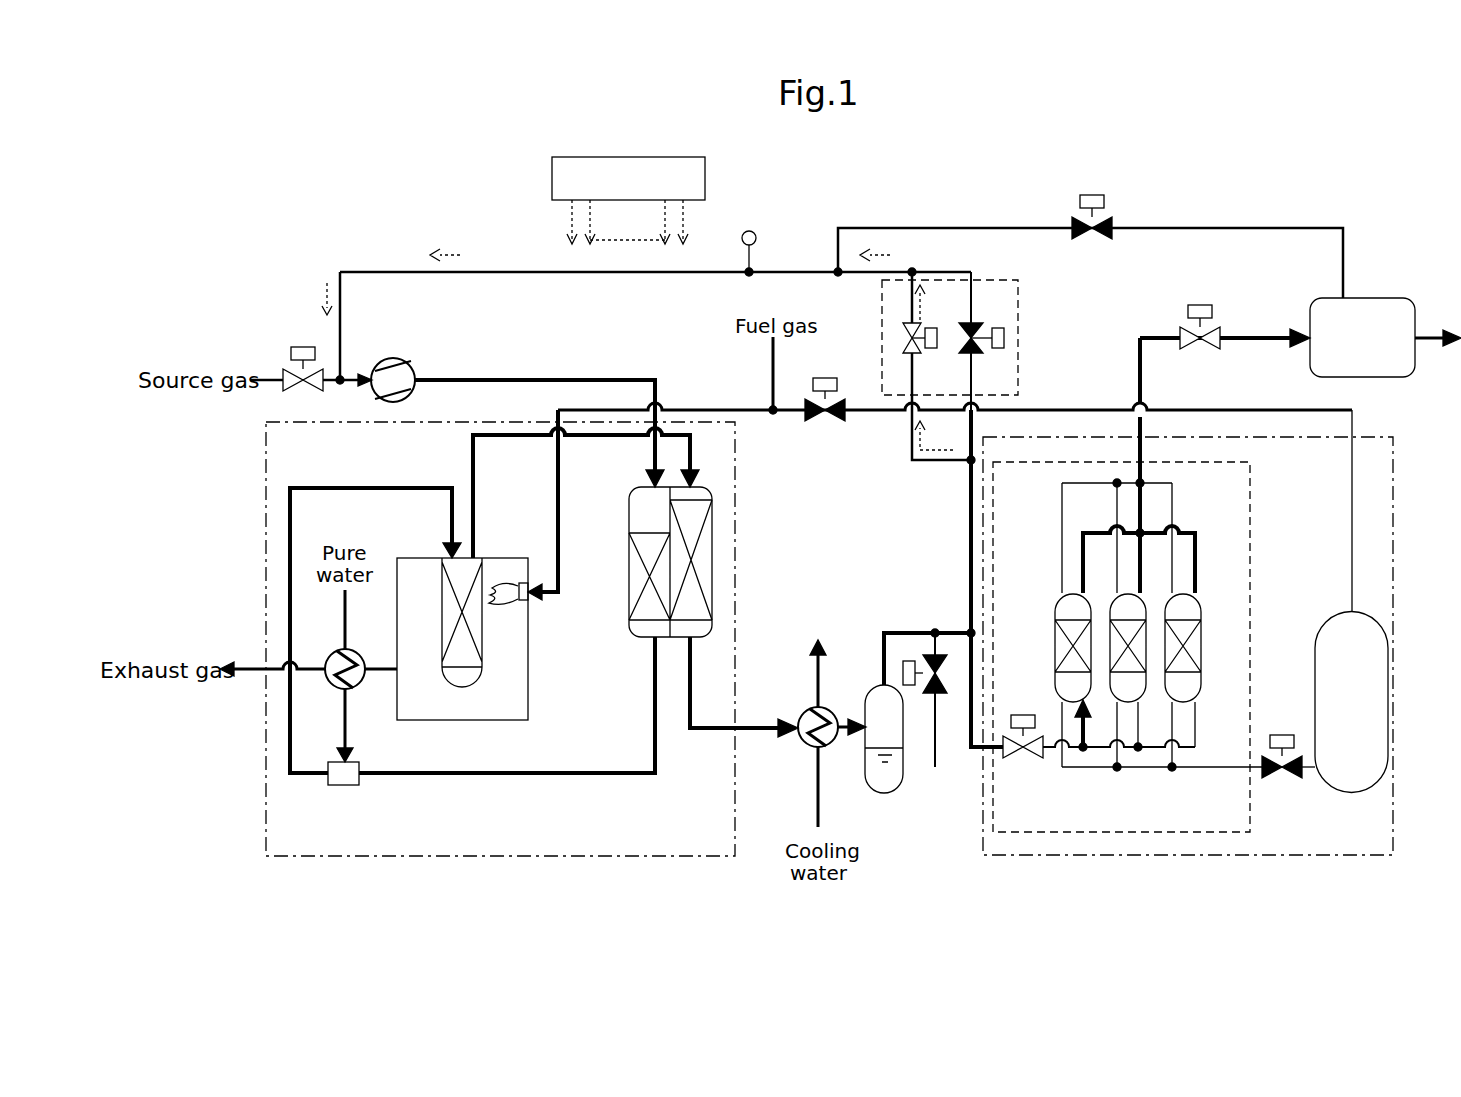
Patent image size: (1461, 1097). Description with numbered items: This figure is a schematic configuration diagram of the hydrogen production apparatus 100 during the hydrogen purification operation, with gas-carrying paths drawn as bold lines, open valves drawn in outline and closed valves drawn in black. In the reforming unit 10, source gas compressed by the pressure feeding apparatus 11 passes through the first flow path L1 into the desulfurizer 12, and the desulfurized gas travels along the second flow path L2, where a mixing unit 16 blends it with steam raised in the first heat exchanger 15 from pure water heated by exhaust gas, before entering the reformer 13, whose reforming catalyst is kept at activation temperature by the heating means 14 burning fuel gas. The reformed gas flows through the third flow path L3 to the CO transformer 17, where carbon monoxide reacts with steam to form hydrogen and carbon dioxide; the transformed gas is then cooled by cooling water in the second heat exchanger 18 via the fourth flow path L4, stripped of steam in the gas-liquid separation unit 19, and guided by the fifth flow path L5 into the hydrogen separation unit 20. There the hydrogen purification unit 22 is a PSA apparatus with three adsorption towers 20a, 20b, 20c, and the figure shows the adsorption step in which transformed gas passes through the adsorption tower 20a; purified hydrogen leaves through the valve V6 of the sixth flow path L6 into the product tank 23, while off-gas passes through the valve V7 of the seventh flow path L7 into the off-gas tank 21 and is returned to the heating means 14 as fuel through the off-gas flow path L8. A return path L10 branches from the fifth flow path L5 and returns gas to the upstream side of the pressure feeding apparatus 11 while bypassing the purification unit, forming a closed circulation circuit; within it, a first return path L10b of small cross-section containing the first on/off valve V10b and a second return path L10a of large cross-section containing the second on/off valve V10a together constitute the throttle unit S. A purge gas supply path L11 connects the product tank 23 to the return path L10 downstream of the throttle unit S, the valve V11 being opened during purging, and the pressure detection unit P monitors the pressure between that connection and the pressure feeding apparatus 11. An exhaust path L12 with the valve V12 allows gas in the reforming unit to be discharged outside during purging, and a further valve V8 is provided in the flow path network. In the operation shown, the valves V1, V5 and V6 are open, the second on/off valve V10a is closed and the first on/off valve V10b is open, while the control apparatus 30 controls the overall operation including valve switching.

The hydrogen production apparatus 100 is at (1222, 208).
The reforming unit 10 is at (455, 858).
The pressure feeding apparatus 11 is at (403, 360).
The desulfurizer 12 is at (629, 572).
The reformer 13 is at (528, 680).
The heating means 14 is at (521, 583).
The first heat exchanger 15 is at (334, 653).
The mixing unit 16 is at (359, 760).
The CO transformer 17 is at (712, 523).
The second heat exchanger 18 is at (800, 712).
The gas-liquid separation unit 19 is at (884, 793).
The hydrogen separation unit 20 is at (1190, 857).
The adsorption tower 20a is at (1068, 748).
The adsorption tower 20b is at (1138, 750).
The adsorption tower 20c is at (1205, 748).
The off-gas tank 21 is at (1315, 650).
The hydrogen purification unit 22 is at (1078, 833).
The product tank 23 is at (1388, 298).
The control apparatus 30 is at (552, 180).
The pressure detection unit P is at (750, 228).
The throttle unit S is at (985, 278).
The valve V1 is at (287, 378).
The valve V5 is at (1014, 715).
The valve V6 is at (1180, 328).
The valve V7 is at (1282, 735).
The valve V8 is at (819, 424).
The second on/off valve V10a is at (1003, 327).
The first on/off valve V10b is at (905, 322).
The valve V11 is at (1092, 195).
The valve V12 is at (936, 651).
The first flow path L1 is at (531, 380).
The second flow path L2 is at (574, 773).
The third flow path L3 is at (473, 455).
The fourth flow path L4 is at (768, 728).
The fifth flow path L5 is at (878, 632).
The sixth flow path L6 is at (1260, 338).
The seventh flow path L7 is at (769, 420).
The off-gas flow path L8 is at (882, 424).
The return path L10 is at (810, 268).
The second return path L10a is at (974, 384).
The first return path L10b is at (908, 374).
The purge gas supply path L11 is at (1313, 228).
The exhaust path L12 is at (936, 764).